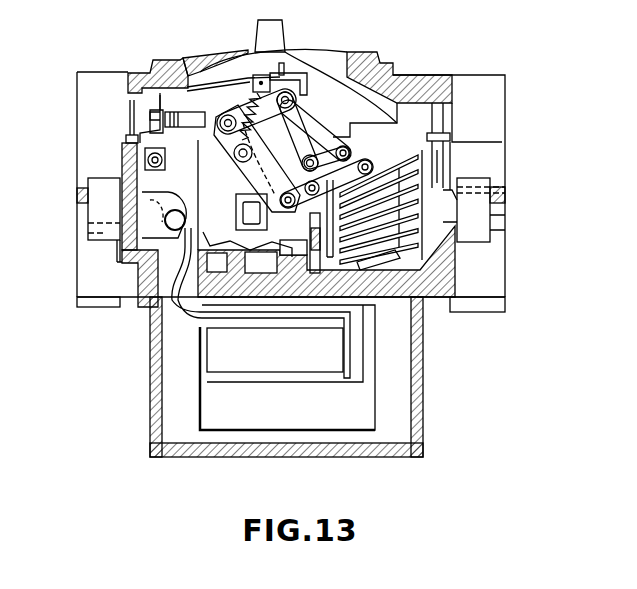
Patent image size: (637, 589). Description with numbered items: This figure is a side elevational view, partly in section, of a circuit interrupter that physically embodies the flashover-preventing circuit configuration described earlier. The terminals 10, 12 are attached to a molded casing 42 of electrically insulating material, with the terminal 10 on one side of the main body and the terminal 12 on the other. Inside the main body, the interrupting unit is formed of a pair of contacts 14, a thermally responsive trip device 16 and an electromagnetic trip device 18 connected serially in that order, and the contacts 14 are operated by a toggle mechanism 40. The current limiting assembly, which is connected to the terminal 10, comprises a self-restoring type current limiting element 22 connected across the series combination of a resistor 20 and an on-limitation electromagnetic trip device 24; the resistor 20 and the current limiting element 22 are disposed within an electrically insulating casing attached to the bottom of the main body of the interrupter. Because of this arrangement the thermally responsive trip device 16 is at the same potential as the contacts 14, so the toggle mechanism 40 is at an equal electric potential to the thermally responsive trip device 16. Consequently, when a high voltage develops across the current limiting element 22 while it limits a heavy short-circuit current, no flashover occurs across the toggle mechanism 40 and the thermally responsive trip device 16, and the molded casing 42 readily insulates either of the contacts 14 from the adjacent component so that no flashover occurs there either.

The terminal 10 is at (477, 225).
The terminal 12 is at (95, 210).
The pair of contacts 14 is at (352, 158).
The thermally responsive trip device 16 is at (184, 110).
The electromagnetic trip device 18 is at (148, 237).
The resistor 20 is at (263, 352).
The self-restoring type current limiting element 22 is at (330, 408).
The on-limitation electromagnetic trip device 24 is at (167, 307).
The toggle mechanism 40 is at (255, 95).
The molded casing 42 is at (118, 265).